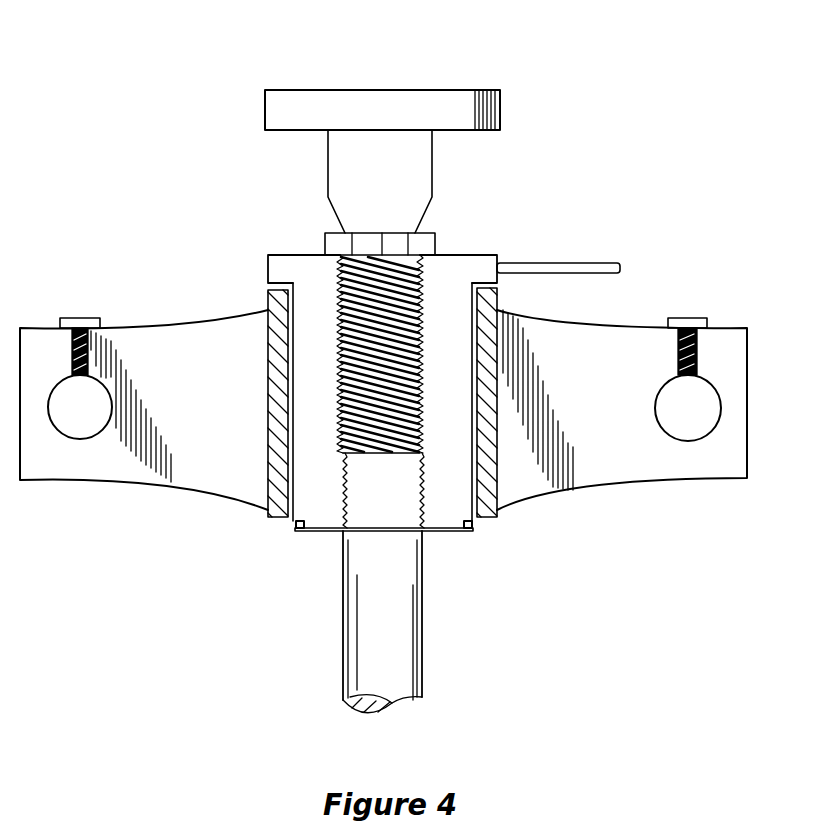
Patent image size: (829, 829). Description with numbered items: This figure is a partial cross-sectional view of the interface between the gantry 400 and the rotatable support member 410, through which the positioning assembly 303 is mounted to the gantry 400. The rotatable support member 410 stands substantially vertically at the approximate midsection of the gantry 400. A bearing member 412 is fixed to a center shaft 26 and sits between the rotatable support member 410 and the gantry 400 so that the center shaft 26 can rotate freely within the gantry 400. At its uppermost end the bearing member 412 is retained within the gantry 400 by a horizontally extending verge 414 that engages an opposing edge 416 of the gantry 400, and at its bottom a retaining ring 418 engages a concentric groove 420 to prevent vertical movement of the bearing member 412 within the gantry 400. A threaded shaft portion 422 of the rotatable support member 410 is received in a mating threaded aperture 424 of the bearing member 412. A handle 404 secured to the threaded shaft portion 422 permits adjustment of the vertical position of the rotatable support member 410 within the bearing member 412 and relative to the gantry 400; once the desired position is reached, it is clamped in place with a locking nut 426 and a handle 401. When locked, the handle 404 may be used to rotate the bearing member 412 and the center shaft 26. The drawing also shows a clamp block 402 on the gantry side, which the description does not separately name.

The positioning assembly 303 is at (206, 147).
The rotatable support member 410 is at (414, 66).
The handle 404 is at (450, 90).
The locking nut 426 is at (428, 240).
The horizontally extending verge 414 is at (262, 268).
The bearing member 412 is at (465, 268).
The handle 401 is at (548, 263).
The opposing edge 416 is at (268, 290).
The threaded shaft portion 422 is at (355, 268).
The threaded aperture 424 is at (450, 482).
The retaining ring 418 is at (303, 528).
The concentric groove 420 is at (300, 535).
The center shaft 26 is at (425, 675).
The left clamp block 402 is at (82, 438).
The gantry 400 is at (722, 337).